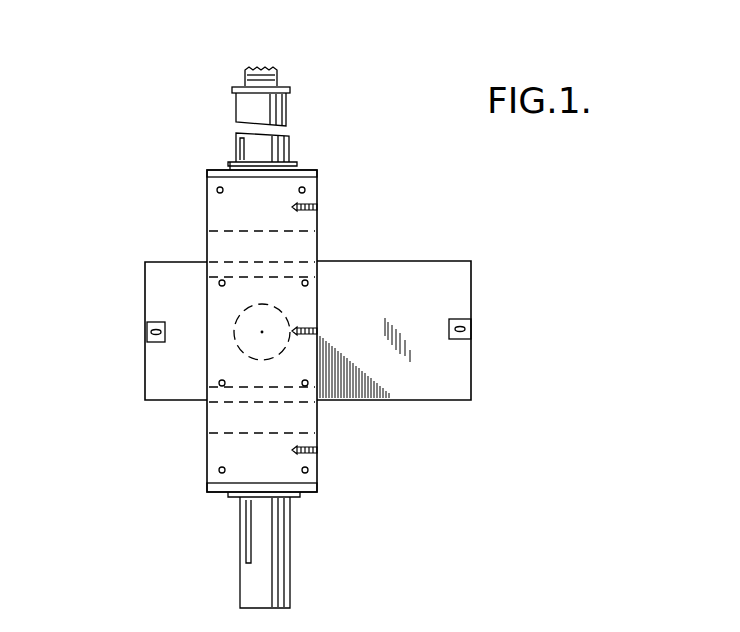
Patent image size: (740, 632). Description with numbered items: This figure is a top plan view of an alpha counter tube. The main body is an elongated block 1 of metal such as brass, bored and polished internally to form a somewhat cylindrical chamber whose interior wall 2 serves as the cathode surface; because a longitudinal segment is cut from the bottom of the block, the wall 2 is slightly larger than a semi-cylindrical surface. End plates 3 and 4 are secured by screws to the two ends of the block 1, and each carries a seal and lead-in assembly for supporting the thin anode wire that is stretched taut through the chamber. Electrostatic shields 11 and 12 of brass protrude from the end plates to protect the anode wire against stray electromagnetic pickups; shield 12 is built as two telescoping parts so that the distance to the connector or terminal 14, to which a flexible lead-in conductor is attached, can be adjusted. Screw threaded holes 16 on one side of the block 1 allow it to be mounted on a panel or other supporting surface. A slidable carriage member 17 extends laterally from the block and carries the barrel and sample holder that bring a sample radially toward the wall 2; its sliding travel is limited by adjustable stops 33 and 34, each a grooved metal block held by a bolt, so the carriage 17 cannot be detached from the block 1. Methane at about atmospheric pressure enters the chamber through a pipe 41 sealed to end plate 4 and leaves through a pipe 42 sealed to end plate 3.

The elongated block of metal 1 is at (216, 204).
The interior wall 2 is at (128, 331).
The end plate 3 is at (220, 54).
The end plate 4 is at (317, 172).
The electrostatic shield 11 is at (278, 556).
The electrostatic shield 12 is at (280, 113).
The connector or terminal 14 is at (245, 72).
The screw threaded holes 16 is at (320, 210).
The slidable carriage member 17 is at (427, 388).
The adjustable stop 33 is at (152, 322).
The adjustable stop 34 is at (470, 327).
The pipe 41 is at (240, 148).
The pipe 42 is at (246, 540).